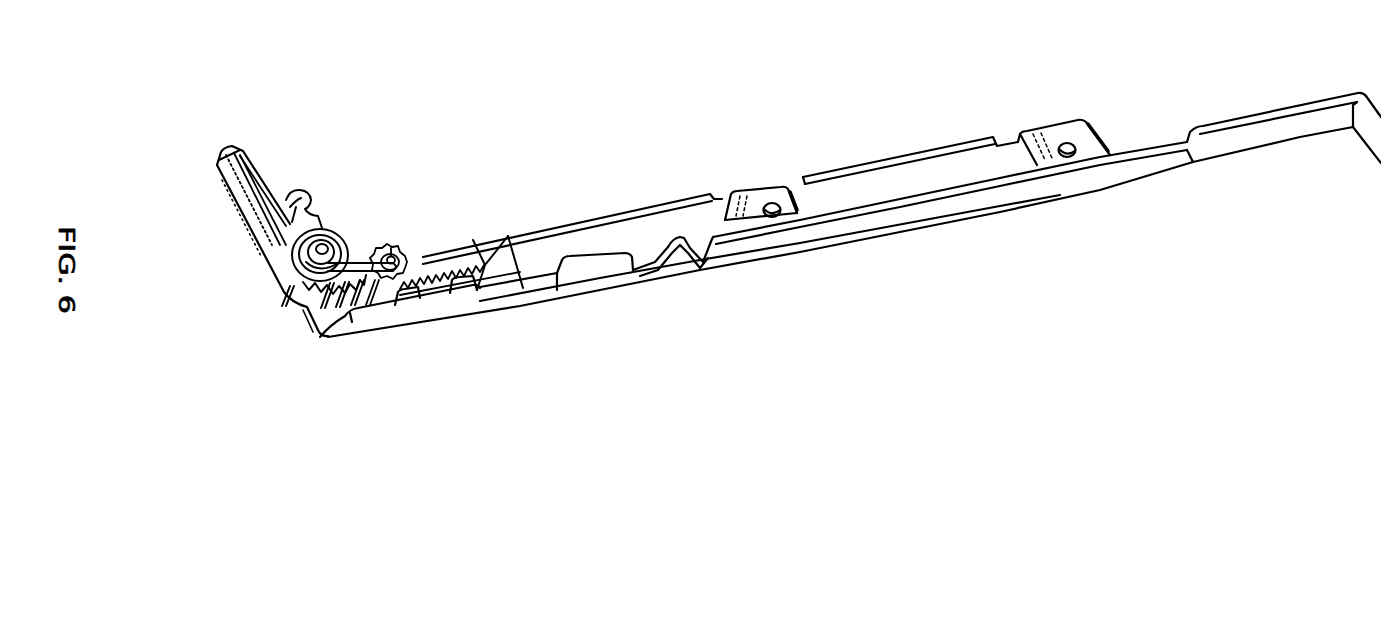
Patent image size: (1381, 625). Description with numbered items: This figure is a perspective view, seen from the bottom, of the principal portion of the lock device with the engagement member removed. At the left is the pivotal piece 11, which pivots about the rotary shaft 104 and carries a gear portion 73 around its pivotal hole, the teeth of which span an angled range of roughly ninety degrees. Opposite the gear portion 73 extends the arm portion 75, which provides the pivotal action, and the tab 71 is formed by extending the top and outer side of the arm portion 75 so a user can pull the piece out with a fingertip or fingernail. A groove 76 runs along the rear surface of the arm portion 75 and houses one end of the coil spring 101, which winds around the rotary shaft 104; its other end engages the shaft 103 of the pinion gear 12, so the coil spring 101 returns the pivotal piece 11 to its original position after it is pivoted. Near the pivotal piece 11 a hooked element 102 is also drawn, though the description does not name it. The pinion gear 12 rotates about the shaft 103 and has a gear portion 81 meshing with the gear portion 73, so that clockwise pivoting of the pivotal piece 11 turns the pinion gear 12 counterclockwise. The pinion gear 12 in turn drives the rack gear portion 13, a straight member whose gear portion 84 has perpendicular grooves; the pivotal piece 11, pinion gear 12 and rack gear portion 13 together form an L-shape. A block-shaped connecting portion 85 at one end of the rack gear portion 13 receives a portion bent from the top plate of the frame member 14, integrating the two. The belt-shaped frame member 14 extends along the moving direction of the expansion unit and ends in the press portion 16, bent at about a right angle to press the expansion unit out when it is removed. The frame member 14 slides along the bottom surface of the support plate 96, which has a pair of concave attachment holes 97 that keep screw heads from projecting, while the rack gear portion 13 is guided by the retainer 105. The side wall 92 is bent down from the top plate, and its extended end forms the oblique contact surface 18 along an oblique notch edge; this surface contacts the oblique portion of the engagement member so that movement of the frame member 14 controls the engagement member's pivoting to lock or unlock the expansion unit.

The pivotal piece 11 is at (235, 194).
The pinion gear 12 is at (400, 247).
The rack gear portion 13 is at (455, 262).
The frame member 14 is at (1123, 177).
The press portion 16 is at (1367, 146).
The oblique contact surface 18 is at (667, 262).
The tab 71 is at (228, 155).
The gear portion 73 is at (313, 307).
The arm portion 75 is at (243, 222).
The groove 76 is at (252, 167).
The gear portion 81 is at (373, 300).
The gear portion 84 is at (482, 270).
The connecting portion 85 is at (502, 263).
The side wall 92 is at (598, 276).
The support plate 96 is at (1050, 130).
The attachment holes 97 is at (772, 208).
The coil spring 101 is at (313, 240).
The hook 102 is at (308, 193).
The shaft 103 is at (390, 242).
The rotary shaft 104 is at (370, 240).
The retainer 105 is at (412, 320).